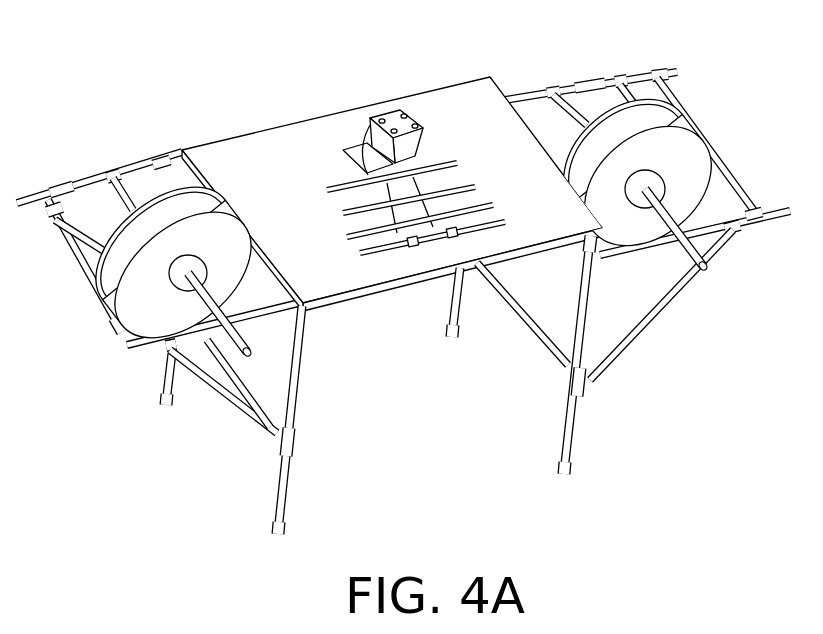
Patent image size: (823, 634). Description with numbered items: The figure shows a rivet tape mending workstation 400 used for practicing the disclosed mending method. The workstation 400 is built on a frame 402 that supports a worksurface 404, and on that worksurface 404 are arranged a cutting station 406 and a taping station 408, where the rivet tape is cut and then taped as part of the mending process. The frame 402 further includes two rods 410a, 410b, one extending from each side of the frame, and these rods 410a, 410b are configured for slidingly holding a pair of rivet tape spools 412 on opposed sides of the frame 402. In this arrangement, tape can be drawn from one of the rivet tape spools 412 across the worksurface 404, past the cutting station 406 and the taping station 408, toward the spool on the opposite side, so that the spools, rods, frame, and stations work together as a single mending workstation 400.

The workstation 400 is at (405, 276).
The frame 402 is at (660, 313).
The worksurface 404 is at (230, 150).
The cutting station 406 is at (420, 98).
The taping station 408 is at (397, 266).
The rod 410a is at (252, 355).
The rod 410b is at (708, 270).
The rivet tape spools 412 is at (677, 122).